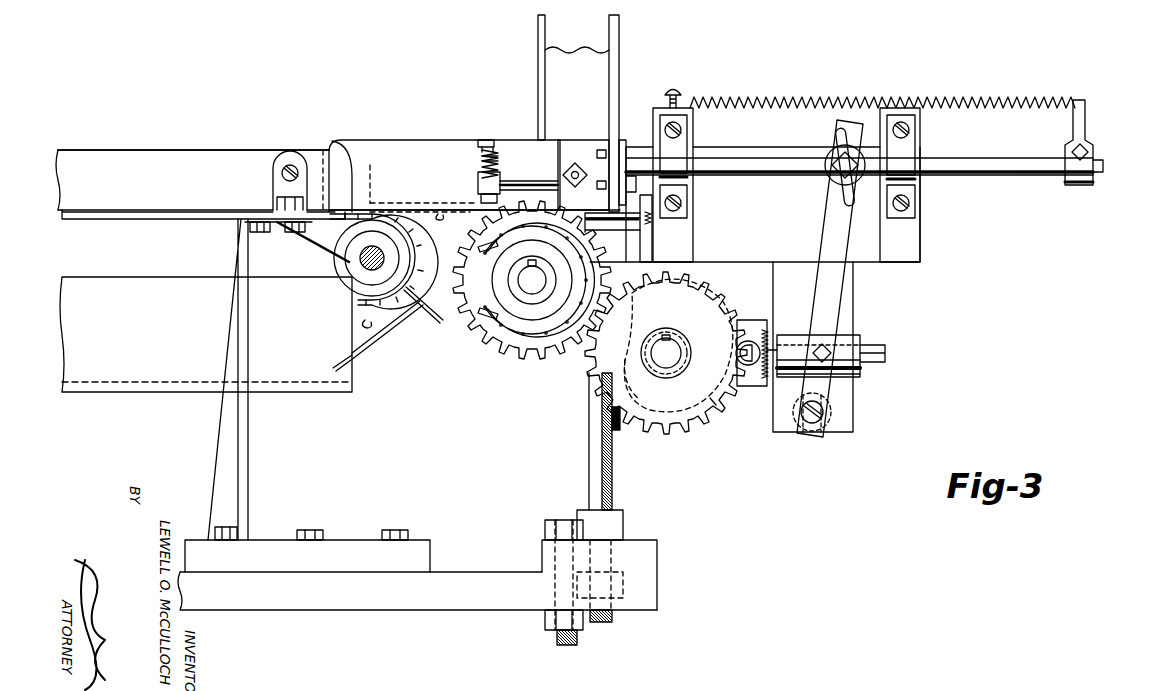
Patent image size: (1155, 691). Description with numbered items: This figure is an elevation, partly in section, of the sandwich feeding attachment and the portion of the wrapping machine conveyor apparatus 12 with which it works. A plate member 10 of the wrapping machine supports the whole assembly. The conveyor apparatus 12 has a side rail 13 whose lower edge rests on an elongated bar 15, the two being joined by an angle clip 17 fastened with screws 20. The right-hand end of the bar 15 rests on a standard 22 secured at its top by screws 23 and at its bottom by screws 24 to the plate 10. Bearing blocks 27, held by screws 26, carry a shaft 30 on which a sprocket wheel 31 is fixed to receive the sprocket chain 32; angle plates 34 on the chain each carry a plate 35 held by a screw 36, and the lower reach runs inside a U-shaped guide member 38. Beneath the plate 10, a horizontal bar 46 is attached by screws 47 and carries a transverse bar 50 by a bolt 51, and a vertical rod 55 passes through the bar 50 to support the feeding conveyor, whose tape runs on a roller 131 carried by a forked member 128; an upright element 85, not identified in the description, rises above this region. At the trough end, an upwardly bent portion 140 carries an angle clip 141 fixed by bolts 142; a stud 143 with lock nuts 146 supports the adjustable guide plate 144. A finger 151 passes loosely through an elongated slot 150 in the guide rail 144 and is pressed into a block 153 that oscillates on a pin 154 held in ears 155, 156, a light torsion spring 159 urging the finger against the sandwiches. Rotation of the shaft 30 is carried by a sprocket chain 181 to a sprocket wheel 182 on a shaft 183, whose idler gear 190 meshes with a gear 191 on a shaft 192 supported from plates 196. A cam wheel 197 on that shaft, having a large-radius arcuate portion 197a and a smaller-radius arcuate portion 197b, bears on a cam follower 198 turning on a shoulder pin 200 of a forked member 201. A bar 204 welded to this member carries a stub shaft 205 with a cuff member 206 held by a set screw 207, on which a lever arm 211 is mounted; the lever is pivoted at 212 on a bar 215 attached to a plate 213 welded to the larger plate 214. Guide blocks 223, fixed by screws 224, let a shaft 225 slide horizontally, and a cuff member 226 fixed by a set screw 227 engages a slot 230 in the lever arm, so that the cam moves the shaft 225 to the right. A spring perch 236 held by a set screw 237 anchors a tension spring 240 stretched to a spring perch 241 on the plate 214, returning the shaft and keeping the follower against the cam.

The plate member 10 is at (365, 540).
The conveyor apparatus 12 is at (203, 151).
The side rail 13 is at (113, 151).
The elongated bar 15 is at (111, 222).
The angle clip 17 is at (273, 196).
The screws 20 is at (318, 195).
The standard 22 is at (250, 450).
The screws 23 is at (258, 234).
The screws 24 is at (221, 528).
The screws 26 is at (289, 234).
The bearing blocks 27 is at (318, 244).
The shaft 30 is at (364, 250).
The sprocket wheel 31 is at (409, 246).
The sprocket chain 32 is at (419, 258).
The angle plates 34 is at (375, 179).
The plate 35 is at (425, 203).
The screw 36 is at (441, 218).
The guide member 38 is at (328, 393).
The horizontal bar 46 is at (332, 610).
The screws 47 is at (306, 529).
The transverse bar 50 is at (657, 554).
The bolt 51 is at (566, 646).
The rod 55 is at (615, 501).
The post 85 is at (604, 80).
The forked member 128 is at (653, 242).
The roller 131 is at (624, 231).
The upwardly bent portion 140 is at (623, 140).
The angle clip 141 is at (630, 188).
The bolts 142 is at (597, 186).
The stud 143 is at (578, 167).
The guide plate 144 is at (575, 148).
The lock nuts 146 is at (566, 172).
The elongated slot 150 is at (528, 180).
The finger 151 is at (512, 185).
The block 153 is at (479, 186).
The pin 154 is at (492, 142).
The ear 155 is at (480, 142).
The ear 156 is at (480, 201).
The torsion spring 159 is at (480, 156).
The sprocket chain 181 is at (495, 341).
The sprocket wheel 182 is at (535, 322).
The shaft 183 is at (520, 275).
The idler gear 190 is at (517, 360).
The gear 191 is at (700, 426).
The shaft 192 is at (673, 346).
The plates 196 is at (622, 423).
The cam wheel 197 is at (716, 399).
The arcuate portion 197a is at (696, 286).
The arcuate portion 197b is at (640, 398).
The cam follower 198 is at (749, 371).
The shoulder pin 200 is at (758, 326).
The forked member 201 is at (740, 319).
The bar 204 is at (781, 335).
The stub shaft 205 is at (886, 345).
The cuff member 206 is at (860, 374).
The set screw 207 is at (831, 345).
The lever arm 211 is at (838, 270).
The pivot 212 is at (804, 434).
The plate 213 is at (838, 437).
The plate 214 is at (921, 240).
The bar 215 is at (855, 420).
The guide blocks 223 is at (694, 208).
The screws 224 is at (683, 130).
The shaft 225 is at (1024, 177).
The cuff member 226 is at (829, 156).
The set screw 227 is at (829, 173).
The slot 230 is at (843, 195).
The spring perch 236 is at (1087, 127).
The set screw 237 is at (1090, 152).
The tension spring 240 is at (1004, 96).
The spring perch 241 is at (680, 89).